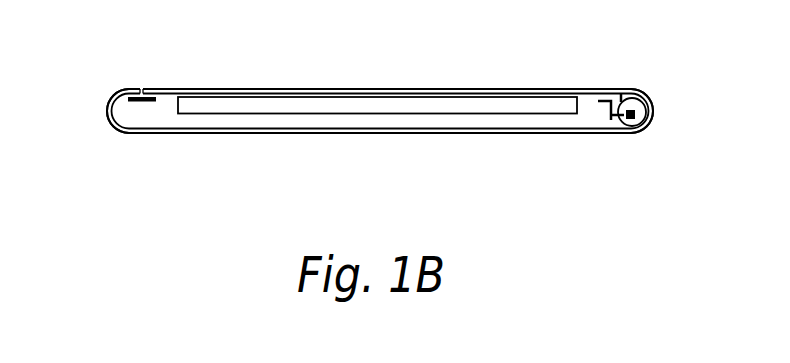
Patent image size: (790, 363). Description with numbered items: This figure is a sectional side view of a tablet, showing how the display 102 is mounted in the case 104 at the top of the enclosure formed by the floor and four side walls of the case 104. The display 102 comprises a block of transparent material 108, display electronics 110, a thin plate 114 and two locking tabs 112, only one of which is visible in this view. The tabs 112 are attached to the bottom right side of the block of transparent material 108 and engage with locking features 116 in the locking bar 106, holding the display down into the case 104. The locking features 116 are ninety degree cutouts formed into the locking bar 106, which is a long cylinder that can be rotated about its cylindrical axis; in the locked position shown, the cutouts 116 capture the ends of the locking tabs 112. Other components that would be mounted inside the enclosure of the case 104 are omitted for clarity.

The display 102 is at (319, 84).
The case 104 is at (113, 129).
The locking bar 106 is at (638, 115).
The block of transparent material 108 is at (420, 89).
The display electronics 110 is at (423, 113).
The locking tabs 112 is at (608, 118).
The thin plate 114 is at (150, 103).
The locking features 116 is at (642, 127).